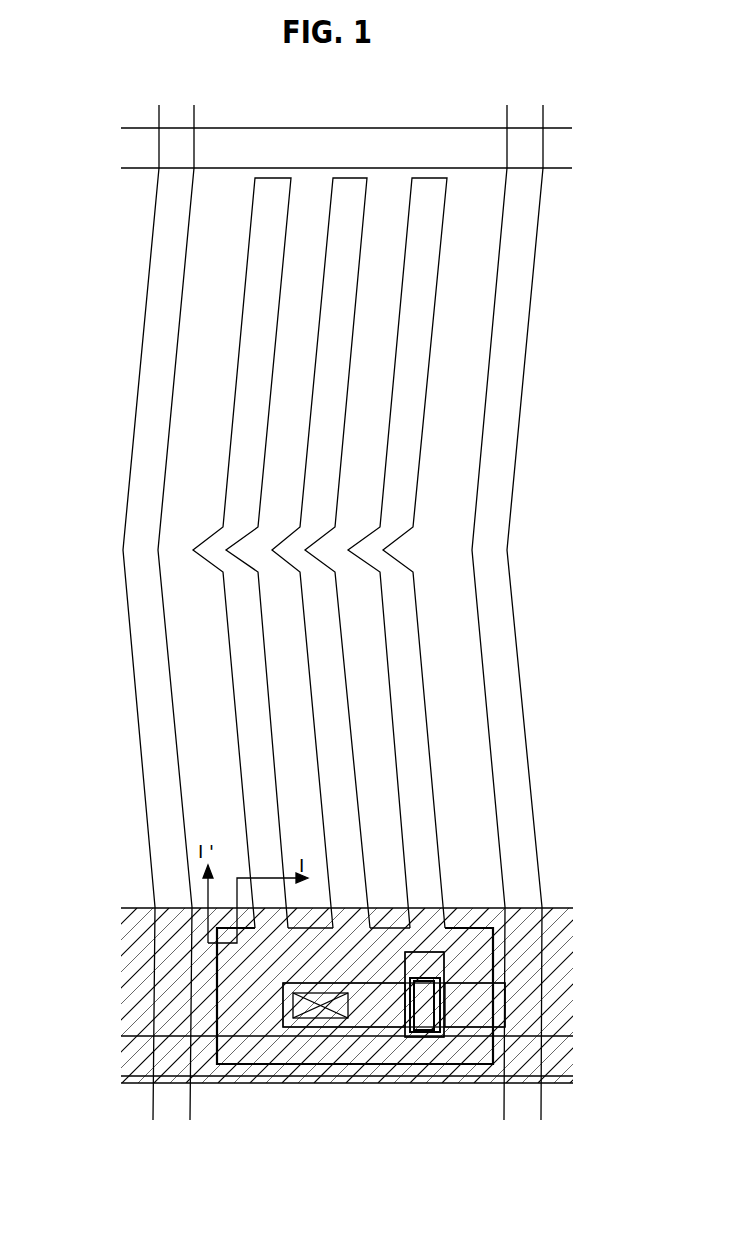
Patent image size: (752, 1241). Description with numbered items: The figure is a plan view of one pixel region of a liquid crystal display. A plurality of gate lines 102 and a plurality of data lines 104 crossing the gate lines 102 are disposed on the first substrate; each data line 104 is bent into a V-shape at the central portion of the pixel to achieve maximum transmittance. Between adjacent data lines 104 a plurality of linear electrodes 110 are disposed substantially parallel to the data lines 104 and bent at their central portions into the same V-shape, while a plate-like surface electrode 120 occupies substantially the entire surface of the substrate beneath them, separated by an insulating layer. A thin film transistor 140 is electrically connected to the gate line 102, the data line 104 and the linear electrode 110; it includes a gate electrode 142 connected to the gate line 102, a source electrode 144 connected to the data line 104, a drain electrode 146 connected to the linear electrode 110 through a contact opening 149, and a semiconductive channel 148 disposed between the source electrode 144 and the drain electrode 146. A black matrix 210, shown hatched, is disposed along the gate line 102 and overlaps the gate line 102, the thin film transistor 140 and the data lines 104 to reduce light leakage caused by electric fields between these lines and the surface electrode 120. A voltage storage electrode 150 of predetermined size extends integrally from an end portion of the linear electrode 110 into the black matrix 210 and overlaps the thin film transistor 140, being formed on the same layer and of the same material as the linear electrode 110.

The gate line 102 is at (140, 168).
The data line 104 is at (128, 605).
The linear electrode 110 is at (433, 322).
The surface electrode 120 is at (472, 245).
The thin film transistor 140 is at (480, 1158).
The gate electrode 142 is at (424, 968).
The source electrode 144 is at (465, 1028).
The drain electrode 146 is at (385, 1028).
The semiconductive channel 148 is at (436, 967).
The contact opening 149 is at (316, 1013).
The voltage storage electrode 150 is at (342, 1064).
The black matrix 210 is at (150, 970).